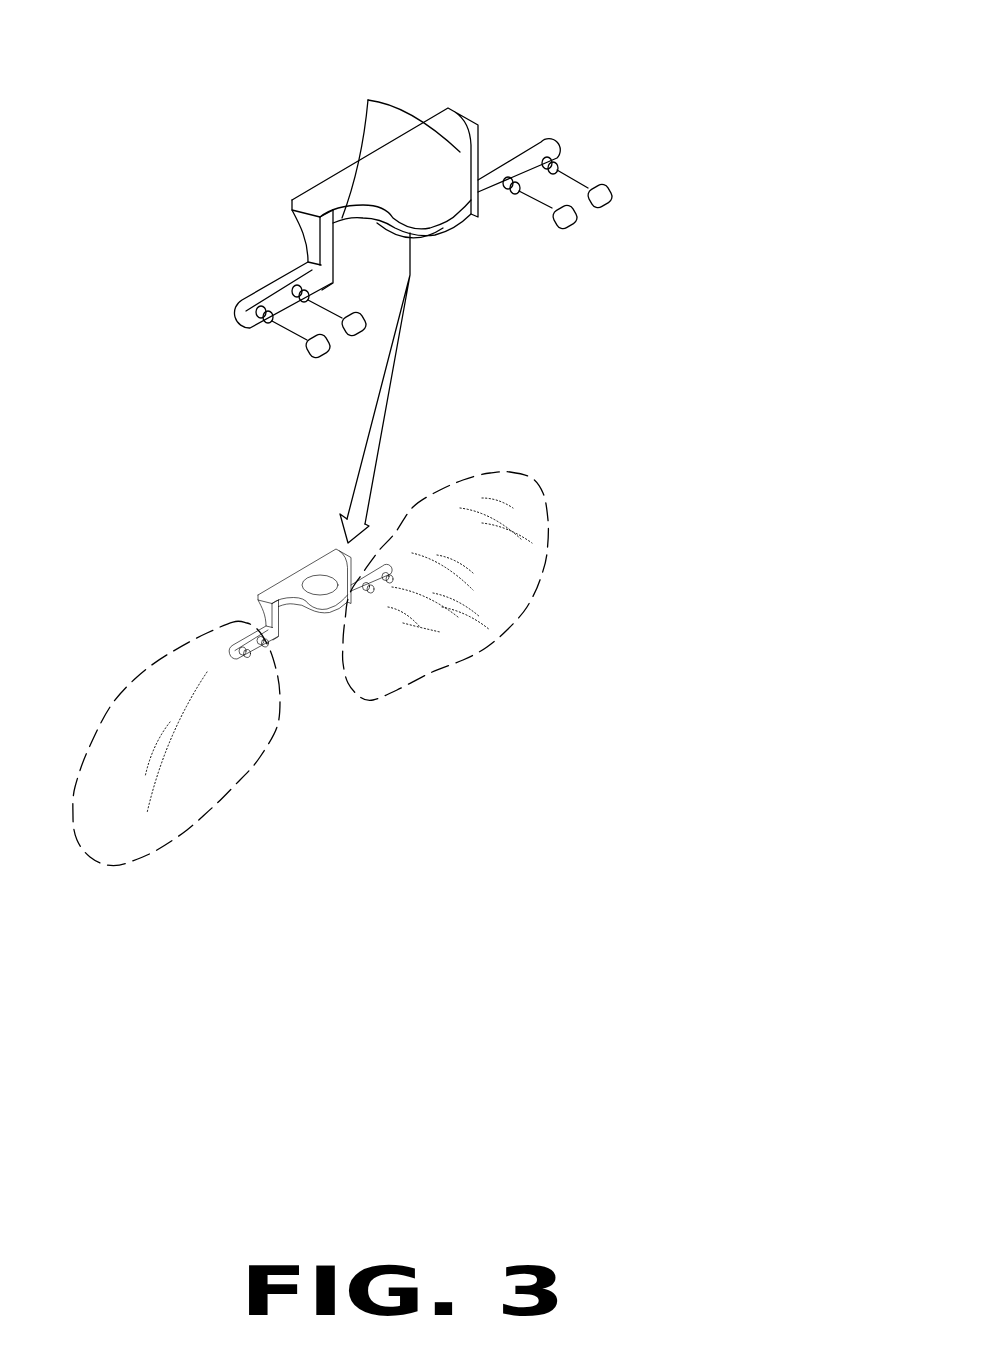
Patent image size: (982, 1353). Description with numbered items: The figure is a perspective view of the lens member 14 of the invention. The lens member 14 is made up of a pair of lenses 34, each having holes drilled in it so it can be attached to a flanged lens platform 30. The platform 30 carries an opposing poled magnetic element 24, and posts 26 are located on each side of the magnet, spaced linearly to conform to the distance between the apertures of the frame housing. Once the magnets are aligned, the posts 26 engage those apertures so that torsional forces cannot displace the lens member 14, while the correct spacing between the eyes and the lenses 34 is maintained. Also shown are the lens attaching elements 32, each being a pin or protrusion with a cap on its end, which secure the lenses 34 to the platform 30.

The lens member 14 is at (560, 470).
The opposing poled magnetic element 24 is at (437, 232).
The posts 26 is at (401, 136).
The flanged lens platform 30 is at (450, 105).
The lens attaching elements 32 is at (558, 160).
The lenses 34 is at (252, 730).